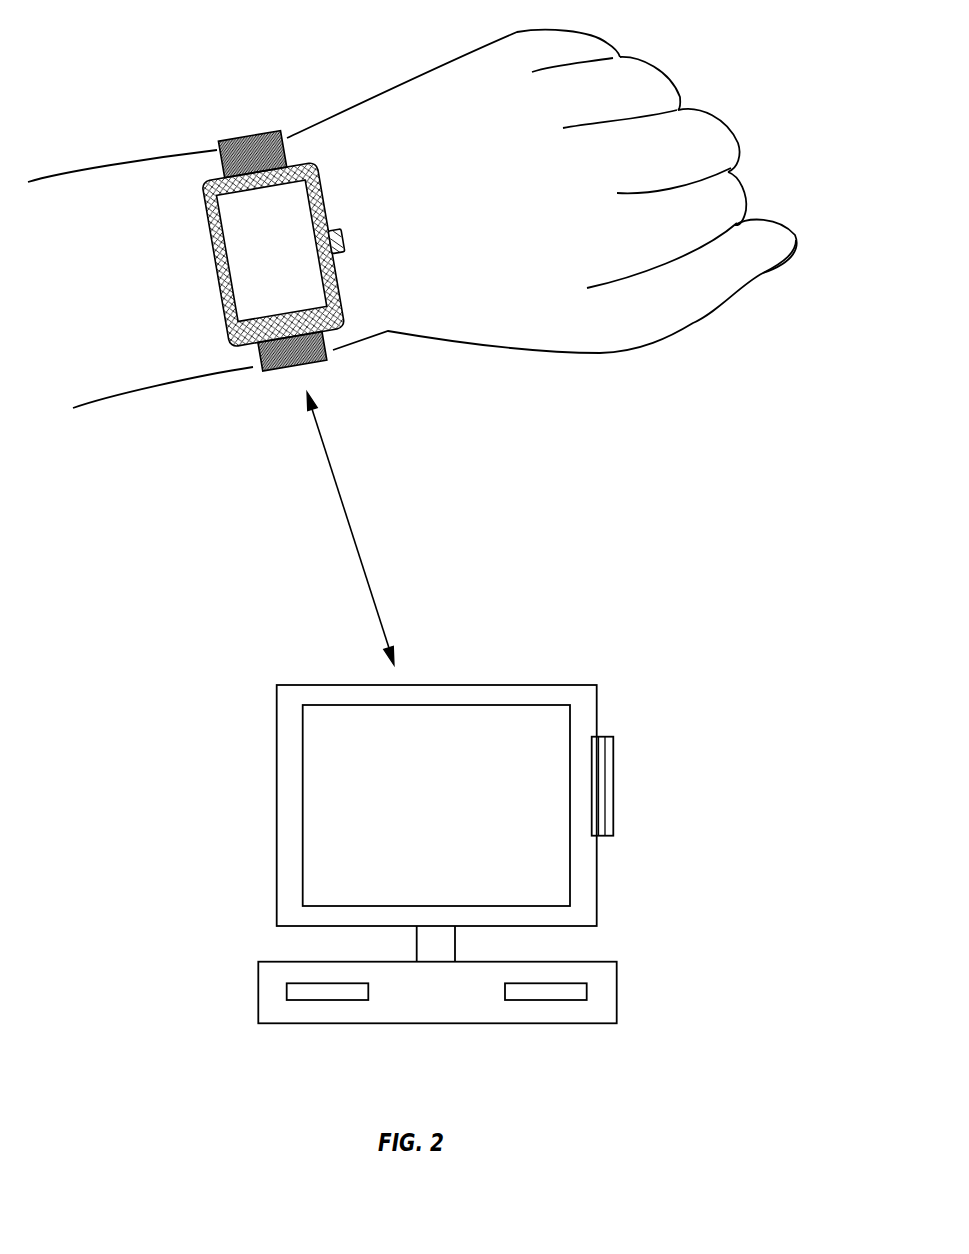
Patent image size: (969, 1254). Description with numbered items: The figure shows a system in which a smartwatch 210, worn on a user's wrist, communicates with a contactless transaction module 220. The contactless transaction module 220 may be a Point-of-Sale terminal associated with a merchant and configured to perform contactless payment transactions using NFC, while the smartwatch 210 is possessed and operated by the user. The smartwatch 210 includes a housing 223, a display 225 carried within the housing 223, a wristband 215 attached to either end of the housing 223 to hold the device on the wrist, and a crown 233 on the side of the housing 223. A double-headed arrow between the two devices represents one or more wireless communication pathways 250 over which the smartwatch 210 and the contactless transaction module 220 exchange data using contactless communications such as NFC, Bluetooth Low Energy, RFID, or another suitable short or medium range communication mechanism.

The smartwatch 210 is at (264, 210).
The wristband 215 is at (233, 160).
The contactless transaction module 220 is at (606, 657).
The housing 223 is at (218, 278).
The display 225 is at (243, 242).
The crown 233 is at (346, 241).
The wireless communication pathway 250 is at (347, 517).